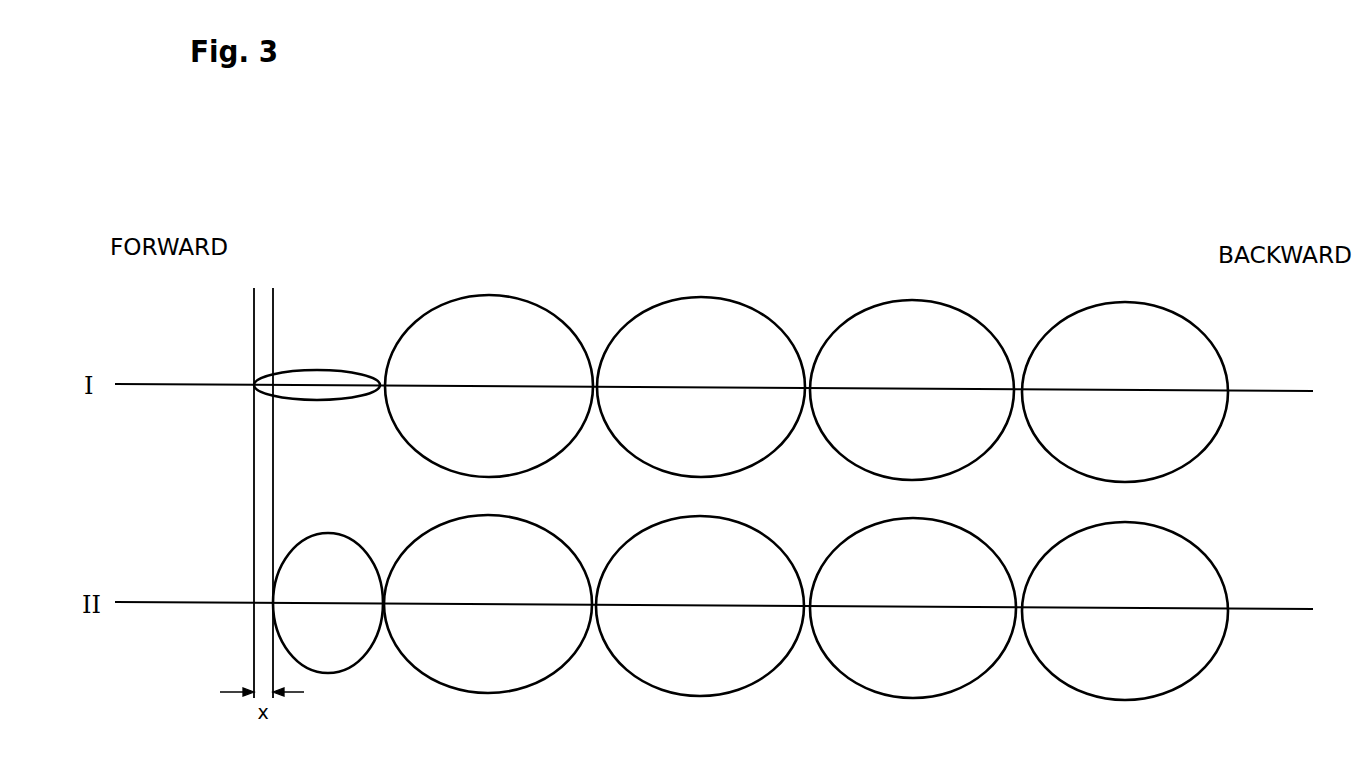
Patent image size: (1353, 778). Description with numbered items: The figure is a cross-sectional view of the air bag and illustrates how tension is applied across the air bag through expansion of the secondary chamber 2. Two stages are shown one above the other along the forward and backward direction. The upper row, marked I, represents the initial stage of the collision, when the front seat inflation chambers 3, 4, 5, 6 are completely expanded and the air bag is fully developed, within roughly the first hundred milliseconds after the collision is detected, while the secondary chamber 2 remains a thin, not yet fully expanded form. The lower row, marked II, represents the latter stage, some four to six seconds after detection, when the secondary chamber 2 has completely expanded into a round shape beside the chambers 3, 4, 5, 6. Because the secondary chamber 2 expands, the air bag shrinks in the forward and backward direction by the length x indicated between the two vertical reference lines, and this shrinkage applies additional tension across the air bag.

The secondary chamber 2 is at (315, 370).
The first chamber 3 is at (476, 357).
The second chamber 4 is at (688, 358).
The third chamber 5 is at (900, 360).
The fourth chamber 6 is at (1113, 362).